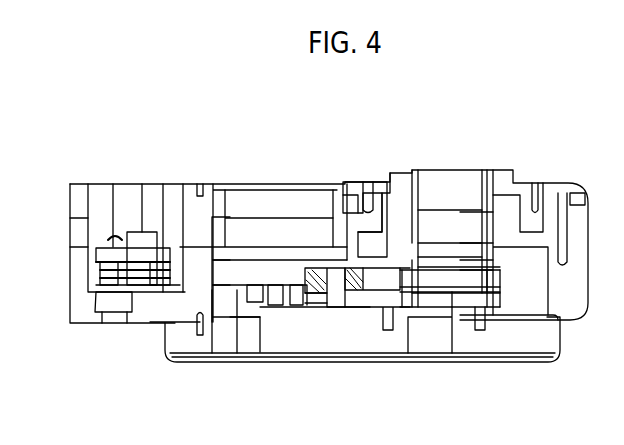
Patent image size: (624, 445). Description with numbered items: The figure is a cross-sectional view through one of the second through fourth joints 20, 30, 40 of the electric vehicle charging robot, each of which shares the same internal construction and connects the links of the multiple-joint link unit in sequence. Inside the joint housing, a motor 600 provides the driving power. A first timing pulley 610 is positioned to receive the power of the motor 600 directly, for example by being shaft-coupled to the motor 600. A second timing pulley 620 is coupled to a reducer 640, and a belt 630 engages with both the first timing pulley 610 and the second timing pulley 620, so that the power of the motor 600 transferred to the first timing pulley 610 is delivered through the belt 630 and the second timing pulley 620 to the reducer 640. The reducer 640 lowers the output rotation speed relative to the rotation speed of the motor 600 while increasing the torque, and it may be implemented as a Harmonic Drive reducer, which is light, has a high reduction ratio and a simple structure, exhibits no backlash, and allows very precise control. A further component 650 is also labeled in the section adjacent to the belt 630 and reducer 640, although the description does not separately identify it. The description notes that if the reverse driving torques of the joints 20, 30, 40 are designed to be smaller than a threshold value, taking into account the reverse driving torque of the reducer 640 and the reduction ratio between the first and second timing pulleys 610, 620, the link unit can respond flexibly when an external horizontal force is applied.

The second joint 20 is at (113, 162).
The third joint 30 is at (329, 252).
The fourth joint 40 is at (329, 252).
The motor 600 is at (307, 330).
The first timing pulley 610 is at (349, 310).
The second timing pulley 620 is at (438, 297).
The belt 630 is at (348, 182).
The reducer 640 is at (453, 182).
The cover member 650 is at (398, 182).